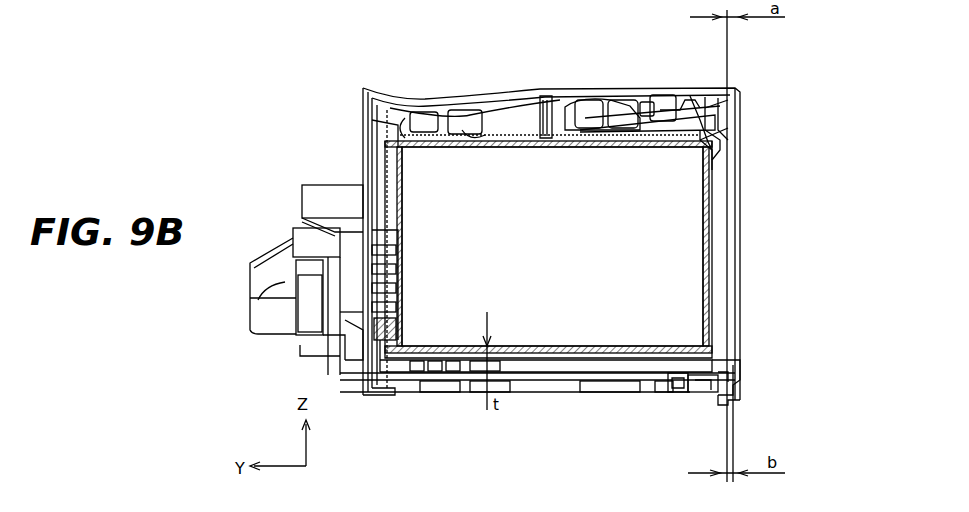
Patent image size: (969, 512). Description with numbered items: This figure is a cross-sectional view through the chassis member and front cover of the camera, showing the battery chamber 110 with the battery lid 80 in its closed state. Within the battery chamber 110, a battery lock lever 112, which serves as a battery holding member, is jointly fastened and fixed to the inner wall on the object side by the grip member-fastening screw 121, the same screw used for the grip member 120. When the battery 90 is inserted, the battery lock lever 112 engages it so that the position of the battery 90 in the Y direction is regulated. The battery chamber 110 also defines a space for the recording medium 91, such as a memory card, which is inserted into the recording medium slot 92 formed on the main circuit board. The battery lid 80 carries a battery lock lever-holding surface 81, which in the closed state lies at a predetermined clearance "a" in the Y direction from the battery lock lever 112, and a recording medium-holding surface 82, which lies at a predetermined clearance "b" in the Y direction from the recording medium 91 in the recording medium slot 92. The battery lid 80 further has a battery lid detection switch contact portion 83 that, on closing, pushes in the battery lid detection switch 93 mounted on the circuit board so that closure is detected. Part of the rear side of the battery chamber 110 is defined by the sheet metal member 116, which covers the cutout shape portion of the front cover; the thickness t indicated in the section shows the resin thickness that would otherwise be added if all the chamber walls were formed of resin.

The battery lid 80 is at (738, 160).
The battery lock lever-holding surface 81 is at (735, 152).
The recording medium-holding surface 82 is at (728, 372).
The battery lid detection switch contact portion 83 is at (705, 400).
The battery 90 is at (690, 240).
The recording medium 91 is at (715, 362).
The recording medium slot 92 is at (598, 373).
The battery lid detection switch 93 is at (690, 385).
The battery chamber 110 is at (470, 355).
The battery lock lever 112 is at (700, 100).
The sheet metal member 116 is at (700, 343).
The grip member 120 is at (600, 98).
The grip member-fastening screw 121 is at (540, 96).